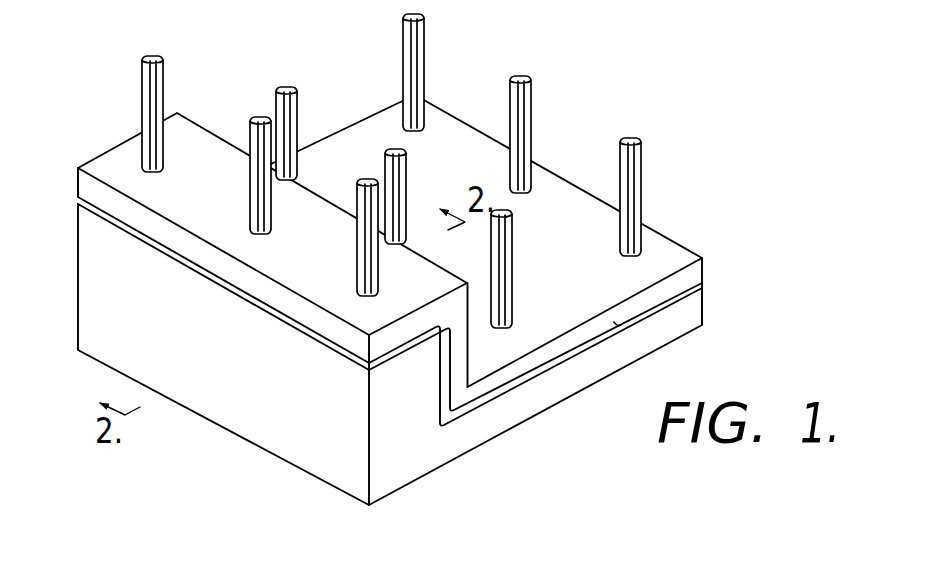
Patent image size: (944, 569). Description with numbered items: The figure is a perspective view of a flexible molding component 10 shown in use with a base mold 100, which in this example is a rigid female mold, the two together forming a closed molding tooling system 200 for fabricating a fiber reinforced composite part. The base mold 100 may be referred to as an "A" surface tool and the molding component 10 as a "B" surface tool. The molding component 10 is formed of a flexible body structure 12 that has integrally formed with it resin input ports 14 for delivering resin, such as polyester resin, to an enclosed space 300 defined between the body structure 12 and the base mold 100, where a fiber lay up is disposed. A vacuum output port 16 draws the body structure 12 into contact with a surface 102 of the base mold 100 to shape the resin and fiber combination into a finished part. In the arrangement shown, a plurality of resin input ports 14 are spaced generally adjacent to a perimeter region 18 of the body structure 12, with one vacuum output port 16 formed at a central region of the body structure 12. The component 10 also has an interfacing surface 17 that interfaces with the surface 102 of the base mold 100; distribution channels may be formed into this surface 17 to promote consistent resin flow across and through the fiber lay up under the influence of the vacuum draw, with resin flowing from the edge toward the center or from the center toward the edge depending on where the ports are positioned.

The flexible molding component 10 is at (689, 238).
The flexible body structure 12 is at (122, 143).
The resin input ports 14 is at (170, 45).
The vacuum output port 16 is at (407, 168).
The interfacing surface 17 is at (618, 326).
The perimeter region 18 is at (61, 185).
The base mold 100 is at (421, 478).
The surface of the base mold 102 is at (577, 350).
The closed molding tooling system 200 is at (795, 290).
The enclosed space 300 is at (711, 277).